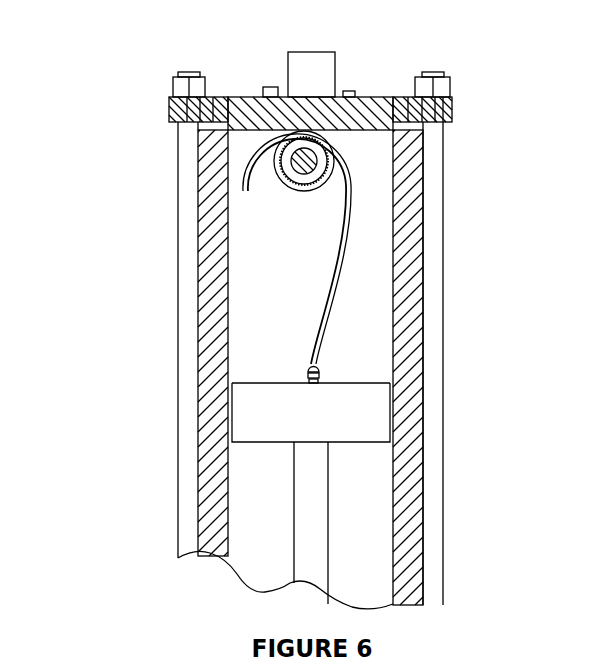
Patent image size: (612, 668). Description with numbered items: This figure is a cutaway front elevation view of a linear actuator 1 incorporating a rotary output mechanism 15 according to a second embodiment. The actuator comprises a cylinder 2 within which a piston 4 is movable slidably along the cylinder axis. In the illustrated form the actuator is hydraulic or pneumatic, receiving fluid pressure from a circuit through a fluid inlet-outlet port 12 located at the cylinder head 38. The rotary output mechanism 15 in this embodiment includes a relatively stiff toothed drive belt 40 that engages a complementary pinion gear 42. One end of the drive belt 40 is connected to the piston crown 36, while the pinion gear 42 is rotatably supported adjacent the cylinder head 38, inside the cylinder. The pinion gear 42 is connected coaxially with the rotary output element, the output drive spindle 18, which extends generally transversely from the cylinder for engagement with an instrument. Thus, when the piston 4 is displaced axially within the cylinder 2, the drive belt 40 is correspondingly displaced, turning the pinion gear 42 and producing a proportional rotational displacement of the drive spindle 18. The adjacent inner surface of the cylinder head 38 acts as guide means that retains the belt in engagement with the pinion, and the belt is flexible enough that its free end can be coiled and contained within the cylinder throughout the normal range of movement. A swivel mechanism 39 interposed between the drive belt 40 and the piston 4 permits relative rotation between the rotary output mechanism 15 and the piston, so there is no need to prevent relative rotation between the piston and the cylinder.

The linear actuator 1 is at (148, 199).
The cylinder 2 is at (413, 258).
The piston 4 is at (375, 410).
The fluid inlet-outlet port 12 is at (313, 58).
The rotary output mechanism 15 is at (352, 168).
The output drive spindle 18 is at (313, 183).
The piston crown 36 is at (285, 385).
The cylinder head 38 is at (247, 110).
The swivel mechanism 39 is at (321, 372).
The toothed drive belt 40 is at (345, 268).
The pinion gear 42 is at (318, 150).